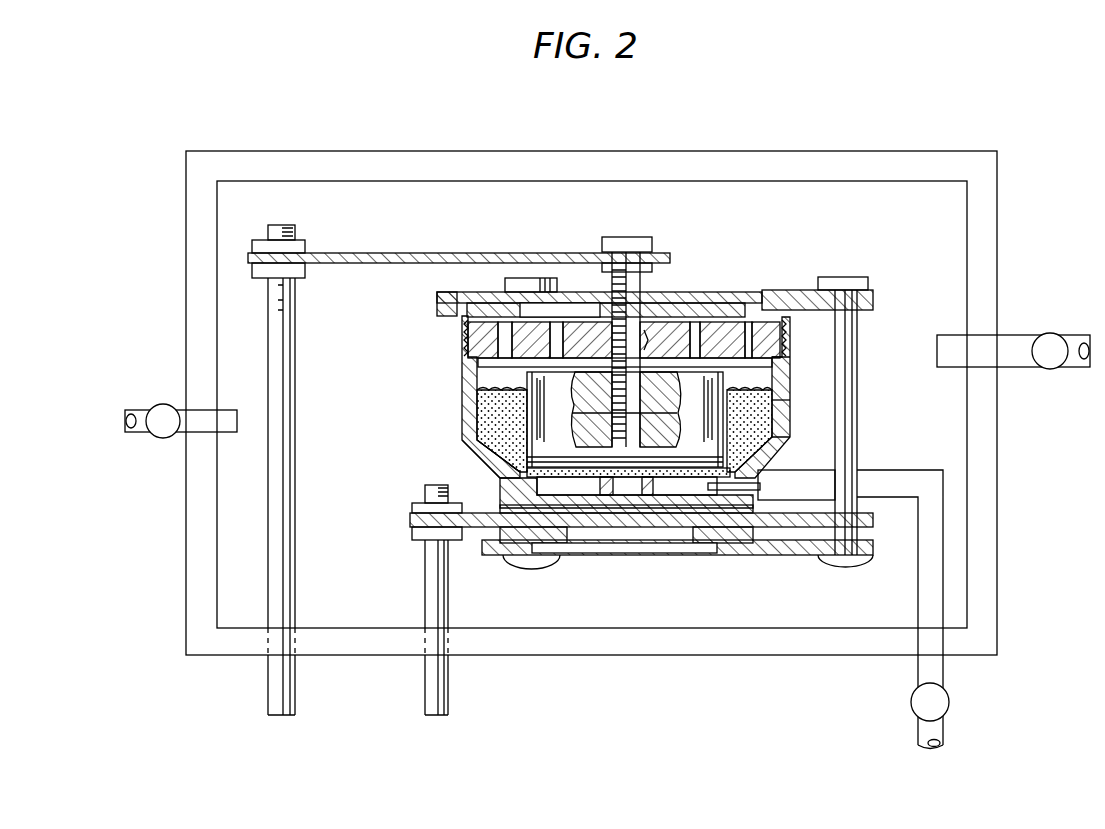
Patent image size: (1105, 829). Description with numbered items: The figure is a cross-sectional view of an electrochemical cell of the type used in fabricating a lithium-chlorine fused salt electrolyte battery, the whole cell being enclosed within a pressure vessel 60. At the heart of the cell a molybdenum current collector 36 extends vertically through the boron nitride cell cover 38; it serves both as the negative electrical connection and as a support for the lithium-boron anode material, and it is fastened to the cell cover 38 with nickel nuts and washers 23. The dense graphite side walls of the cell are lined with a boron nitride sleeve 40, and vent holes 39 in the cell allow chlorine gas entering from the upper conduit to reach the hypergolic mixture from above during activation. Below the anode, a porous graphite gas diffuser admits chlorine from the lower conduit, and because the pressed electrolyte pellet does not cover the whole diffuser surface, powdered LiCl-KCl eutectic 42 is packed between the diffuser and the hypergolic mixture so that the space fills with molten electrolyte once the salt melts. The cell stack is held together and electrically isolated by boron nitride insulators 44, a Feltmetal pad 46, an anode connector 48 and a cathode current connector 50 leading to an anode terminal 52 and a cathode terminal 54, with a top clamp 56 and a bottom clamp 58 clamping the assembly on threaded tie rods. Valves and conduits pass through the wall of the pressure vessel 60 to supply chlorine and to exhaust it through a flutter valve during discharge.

The pressure vessel 60 is at (626, 150).
The anode connector 48 is at (428, 227).
The anode terminal 52 is at (291, 230).
The cathode terminal 54 is at (425, 582).
The bottom clamp 58 is at (797, 553).
The top clamp 56 is at (772, 290).
The boron nitride insulators 44 is at (457, 312).
The molybdenum current collector 36 is at (602, 262).
The vent holes 39 is at (468, 338).
The washers 23 is at (650, 320).
The boron nitride cell cover 38 is at (462, 352).
The boron nitride sleeve 40 is at (485, 400).
The powdered LiCl-KCl eutectic 42 is at (760, 486).
The Feltmetal pad 46 is at (592, 514).
The cathode current connector 50 is at (630, 527).